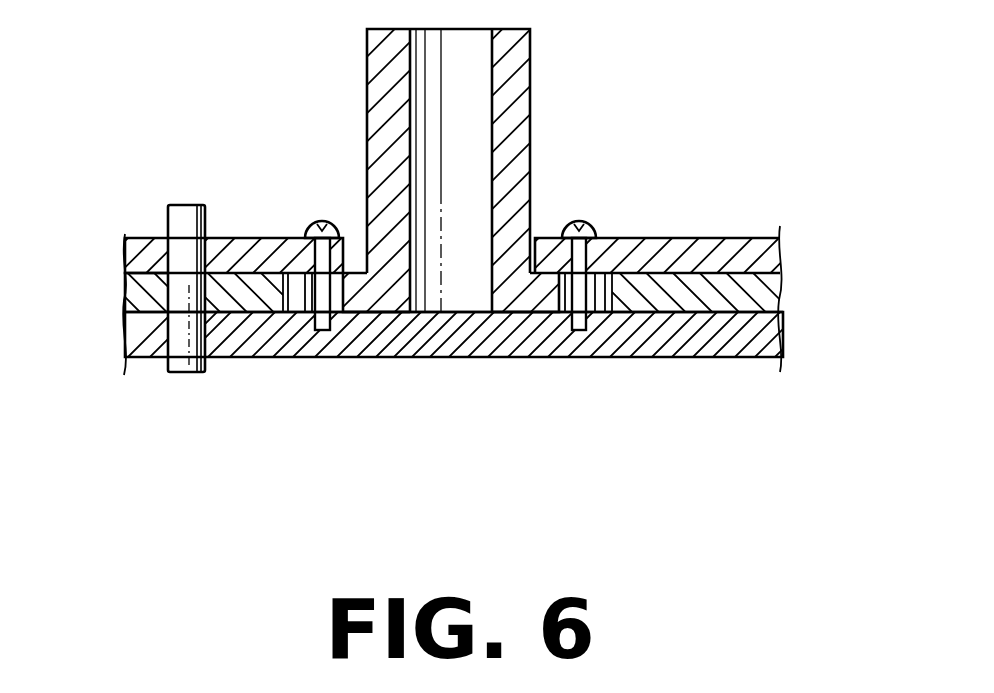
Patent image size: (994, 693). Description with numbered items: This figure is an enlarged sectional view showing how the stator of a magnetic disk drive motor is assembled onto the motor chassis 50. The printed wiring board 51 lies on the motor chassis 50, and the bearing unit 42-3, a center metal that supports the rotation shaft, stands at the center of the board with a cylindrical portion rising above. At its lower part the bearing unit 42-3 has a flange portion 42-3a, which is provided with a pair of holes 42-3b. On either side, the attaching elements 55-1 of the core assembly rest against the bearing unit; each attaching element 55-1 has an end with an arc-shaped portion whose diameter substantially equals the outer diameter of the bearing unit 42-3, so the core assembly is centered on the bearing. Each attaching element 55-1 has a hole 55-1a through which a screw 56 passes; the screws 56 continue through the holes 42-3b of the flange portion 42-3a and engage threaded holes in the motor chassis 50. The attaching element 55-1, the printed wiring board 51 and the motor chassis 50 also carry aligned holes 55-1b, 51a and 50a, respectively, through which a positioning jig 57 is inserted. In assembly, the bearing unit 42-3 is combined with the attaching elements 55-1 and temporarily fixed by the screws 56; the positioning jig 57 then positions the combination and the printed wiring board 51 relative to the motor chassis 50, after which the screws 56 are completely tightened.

The bearing unit 42-3 is at (516, 60).
The flange portion 42-3a is at (352, 314).
The holes 42-3b is at (556, 313).
The motor chassis 50 is at (742, 358).
The hole 50a is at (145, 359).
The printed wiring board 51 is at (778, 292).
The hole 51a is at (123, 290).
The attaching elements 55-1 is at (253, 240).
The hole 55-1a is at (618, 238).
The hole 55-1b is at (167, 237).
The screws 56 is at (323, 224).
The positioning jig 57 is at (182, 374).